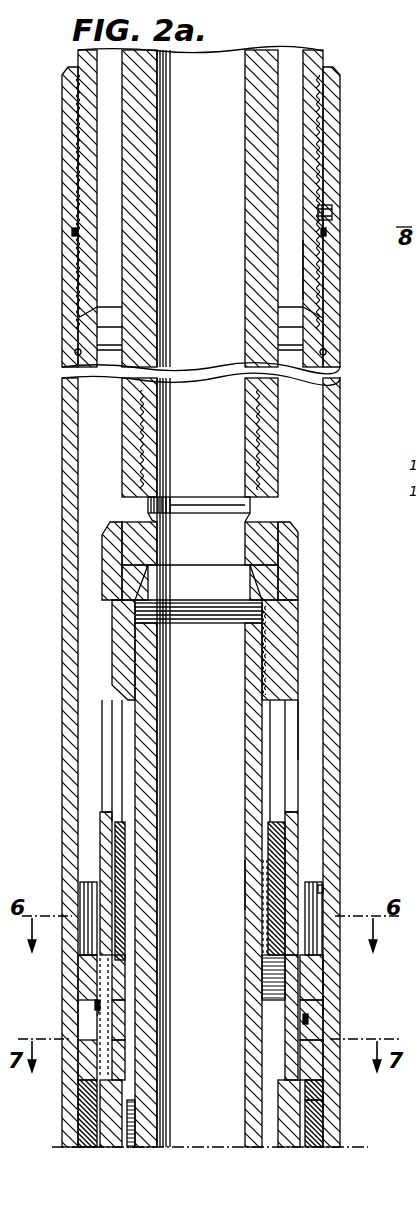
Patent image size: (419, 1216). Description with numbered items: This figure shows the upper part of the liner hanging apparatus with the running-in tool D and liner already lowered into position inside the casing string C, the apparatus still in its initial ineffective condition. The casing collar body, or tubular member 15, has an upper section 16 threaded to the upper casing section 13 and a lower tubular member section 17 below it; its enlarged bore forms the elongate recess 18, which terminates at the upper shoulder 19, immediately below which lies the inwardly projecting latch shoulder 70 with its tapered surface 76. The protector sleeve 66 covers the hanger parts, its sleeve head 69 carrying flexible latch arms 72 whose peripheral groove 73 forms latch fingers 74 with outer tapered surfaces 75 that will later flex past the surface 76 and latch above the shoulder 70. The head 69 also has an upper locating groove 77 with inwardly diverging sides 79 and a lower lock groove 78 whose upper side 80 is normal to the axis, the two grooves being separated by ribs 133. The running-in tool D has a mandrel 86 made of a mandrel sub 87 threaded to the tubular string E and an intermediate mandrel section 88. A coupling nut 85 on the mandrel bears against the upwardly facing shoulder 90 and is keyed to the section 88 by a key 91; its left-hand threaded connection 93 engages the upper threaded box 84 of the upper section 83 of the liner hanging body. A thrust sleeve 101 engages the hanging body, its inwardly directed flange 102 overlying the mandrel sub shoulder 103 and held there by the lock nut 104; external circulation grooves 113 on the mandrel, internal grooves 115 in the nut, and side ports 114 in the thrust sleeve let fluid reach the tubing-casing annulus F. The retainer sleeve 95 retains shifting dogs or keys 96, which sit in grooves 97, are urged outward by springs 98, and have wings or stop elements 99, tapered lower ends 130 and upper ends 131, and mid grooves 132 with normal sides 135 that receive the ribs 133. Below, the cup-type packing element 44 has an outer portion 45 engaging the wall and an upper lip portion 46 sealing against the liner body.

The upper casing section 13 is at (78, 62).
The tubular string E is at (256, 70).
The well casing string C is at (328, 57).
The tubing-casing annulus F is at (293, 150).
The upper section of tubular member 16 is at (314, 266).
The upper shoulder 19 is at (80, 316).
The latch shoulder 70 is at (75, 352).
The tapered surface of latch shoulder 76 is at (326, 356).
The elongate recess 18 is at (78, 450).
The tubular member 15 is at (332, 548).
The mandrel sub 87 is at (262, 506).
The lock nut 104 is at (102, 560).
The mandrel sub shoulder 103 is at (112, 645).
The inwardly directed flange 102 is at (288, 618).
The running-in tool D is at (300, 690).
The thrust sleeve 101 is at (102, 698).
The side ports 114 is at (102, 766).
The external circulation grooves 113 is at (298, 760).
The internal longitudinal grooves 115 is at (130, 862).
The retainer sleeve 95 is at (100, 818).
The upper threaded box 84 is at (115, 862).
The coupling nut 85 is at (280, 825).
The threaded connection 93 is at (292, 865).
The latch fingers 74 is at (82, 897).
The outer tapered surfaces 75 is at (315, 882).
The peripheral groove 73 is at (325, 888).
The flexible latch arms 72 is at (85, 948).
The mandrel 86 is at (243, 872).
The key 91 is at (262, 915).
The intermediate mandrel section 88 is at (248, 1068).
The sides of upper groove 79 is at (90, 972).
The sides of intermediate dog grooves 135 is at (96, 1003).
The ribs 133 is at (97, 1010).
The upper side of lower lock groove 80 is at (90, 1050).
The upwardly facing shoulder 90 is at (125, 965).
The dog grooves 132 is at (112, 1010).
The wings or stop elements 99 is at (115, 1070).
The lower tubular member section 17 is at (78, 1114).
The protector sleeve 66 is at (106, 1147).
The cup-type packing element 44 is at (82, 1147).
The grooves 97 is at (278, 968).
The springs 98 is at (285, 1008).
The upper ends of dogs 131 is at (312, 965).
The sleeve head 69 is at (330, 975).
The upper locating groove 77 is at (312, 995).
The shifting dogs or keys 96 is at (330, 1010).
The lower lock groove 78 is at (312, 1058).
The lower ends of dogs 130 is at (312, 1086).
The upper lip portion 46 is at (330, 1098).
The outer portion of packing element 45 is at (318, 1120).
The upper section of liner hanging body 83 is at (290, 1128).